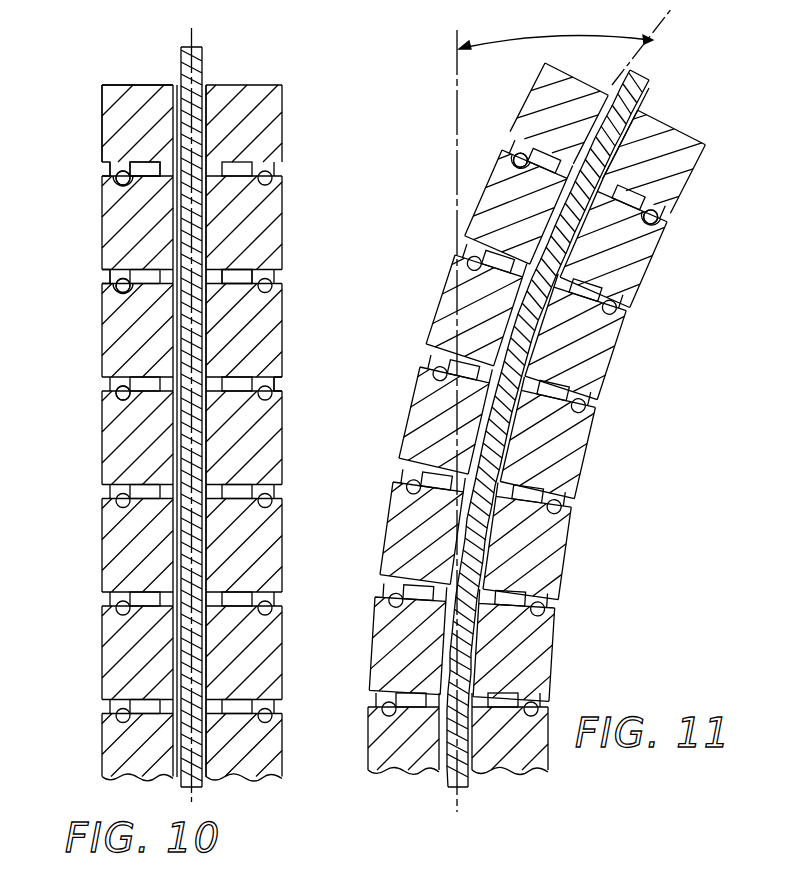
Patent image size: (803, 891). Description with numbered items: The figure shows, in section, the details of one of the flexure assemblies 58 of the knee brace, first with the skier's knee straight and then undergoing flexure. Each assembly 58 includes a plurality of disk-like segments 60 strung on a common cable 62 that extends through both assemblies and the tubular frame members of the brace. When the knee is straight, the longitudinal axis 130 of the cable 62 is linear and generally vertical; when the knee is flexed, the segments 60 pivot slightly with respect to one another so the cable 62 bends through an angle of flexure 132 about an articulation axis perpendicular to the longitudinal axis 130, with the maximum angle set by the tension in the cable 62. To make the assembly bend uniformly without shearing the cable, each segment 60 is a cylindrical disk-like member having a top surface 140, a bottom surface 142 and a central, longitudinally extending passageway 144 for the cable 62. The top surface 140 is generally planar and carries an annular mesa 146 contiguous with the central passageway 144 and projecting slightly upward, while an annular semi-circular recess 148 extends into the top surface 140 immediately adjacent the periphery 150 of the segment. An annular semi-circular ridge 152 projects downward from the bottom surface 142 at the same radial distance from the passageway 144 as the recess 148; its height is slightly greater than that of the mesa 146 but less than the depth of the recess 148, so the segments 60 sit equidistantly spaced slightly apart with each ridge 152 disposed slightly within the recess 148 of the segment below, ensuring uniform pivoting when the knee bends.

In FIG. 10, the flexure assembly 58 is at (98, 517).
In FIG. 11, the flexure assembly 58 is at (590, 486).
In FIG. 10, the disk-like segment 60 is at (278, 200).
In FIG. 11, the disk-like segment 60 is at (697, 150).
In FIG. 10, the cable 62 is at (208, 50).
In FIG. 11, the cable 62 is at (652, 89).
In FIG. 10, the longitudinal axis 130 is at (189, 42).
In FIG. 11, the longitudinal axis 130 is at (456, 78).
In FIG. 11, the angle of flexure 132 is at (565, 46).
In FIG. 10, the top surface 140 is at (130, 165).
In FIG. 10, the bottom surface 142 is at (147, 162).
In FIG. 10, the central passageway 144 is at (181, 82).
In FIG. 10, the annular mesa 146 is at (212, 163).
In FIG. 11, the annular mesa 146 is at (587, 104).
In FIG. 10, the annular recess 148 is at (121, 187).
In FIG. 11, the annular recess 148 is at (517, 157).
In FIG. 10, the periphery 150 is at (102, 88).
In FIG. 10, the annular ridge 152 is at (116, 176).
In FIG. 11, the annular ridge 152 is at (524, 135).